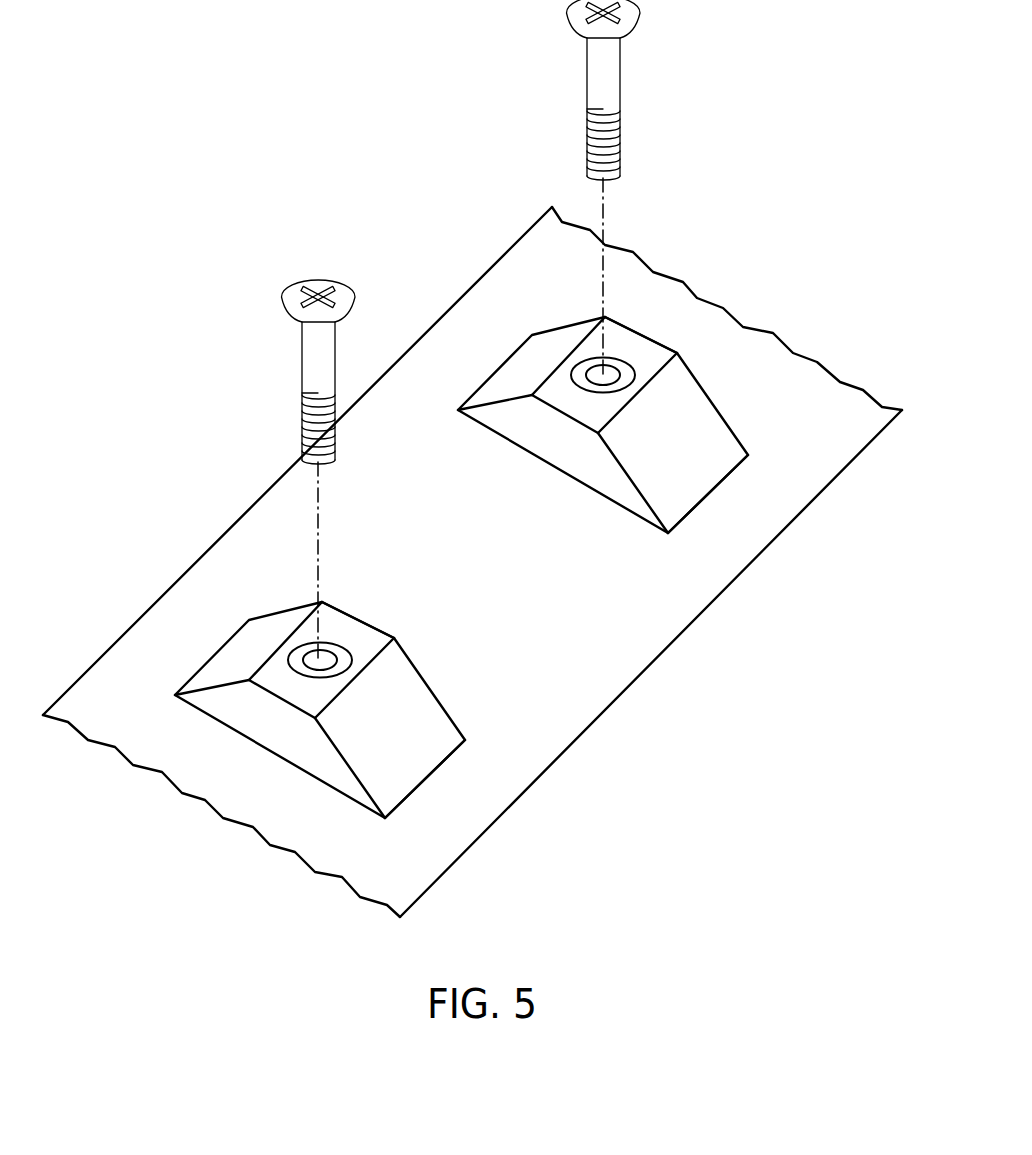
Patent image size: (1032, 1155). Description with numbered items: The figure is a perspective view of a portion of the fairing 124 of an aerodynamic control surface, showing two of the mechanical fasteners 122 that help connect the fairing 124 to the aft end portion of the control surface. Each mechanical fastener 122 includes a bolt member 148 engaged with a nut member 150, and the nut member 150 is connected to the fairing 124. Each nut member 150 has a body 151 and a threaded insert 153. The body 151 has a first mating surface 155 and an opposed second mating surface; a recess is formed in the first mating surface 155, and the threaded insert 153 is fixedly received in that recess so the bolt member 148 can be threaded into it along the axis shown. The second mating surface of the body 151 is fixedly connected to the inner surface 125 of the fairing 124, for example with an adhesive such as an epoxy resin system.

The mechanical fastener 122 is at (470, 409).
The fairing 124 is at (842, 403).
The inner surface 125 is at (472, 562).
The bolt member 148 is at (303, 365).
The nut member 150 is at (705, 423).
The body 151 is at (690, 472).
The threaded insert 153 is at (637, 357).
The first mating surface 155 is at (622, 337).